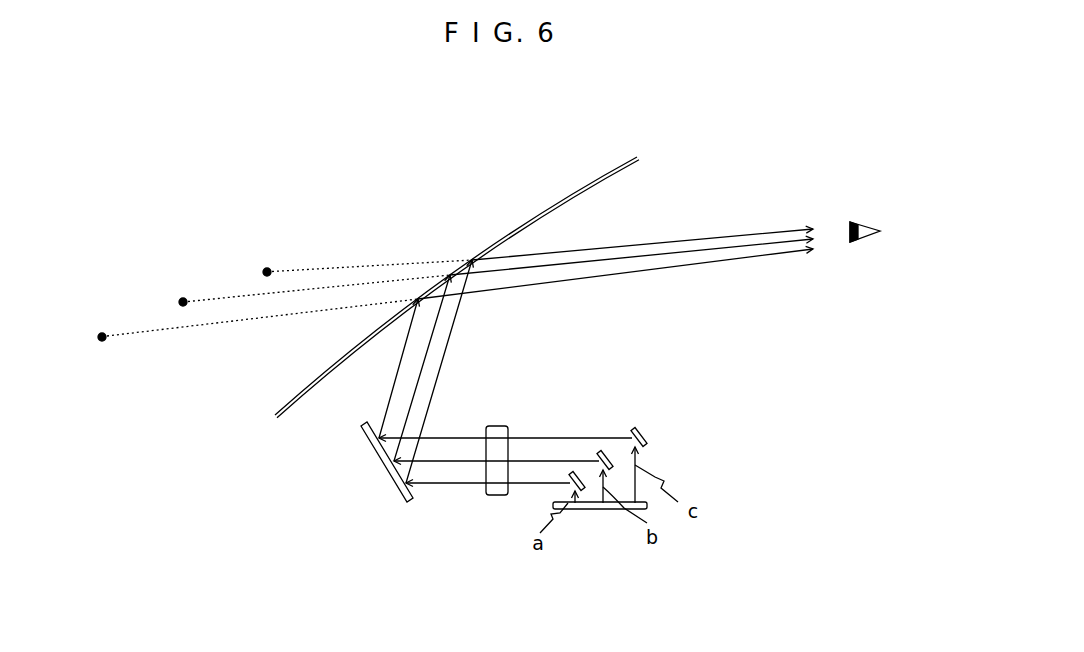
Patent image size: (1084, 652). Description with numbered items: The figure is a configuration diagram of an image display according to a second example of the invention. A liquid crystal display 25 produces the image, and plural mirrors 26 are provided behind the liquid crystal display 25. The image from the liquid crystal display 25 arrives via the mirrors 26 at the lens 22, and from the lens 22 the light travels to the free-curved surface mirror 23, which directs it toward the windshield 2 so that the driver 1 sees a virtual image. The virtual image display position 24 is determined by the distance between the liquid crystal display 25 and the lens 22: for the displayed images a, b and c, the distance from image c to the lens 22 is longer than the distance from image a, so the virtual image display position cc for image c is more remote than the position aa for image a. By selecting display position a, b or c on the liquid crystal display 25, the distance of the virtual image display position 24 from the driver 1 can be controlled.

The driver 1 is at (898, 216).
The windshield 2 is at (477, 287).
The lens 22 is at (477, 489).
The free-curved surface mirror 23 is at (376, 481).
The virtual image display position 24 is at (60, 334).
The liquid crystal display 25 is at (603, 548).
The mirrors 26 is at (643, 423).